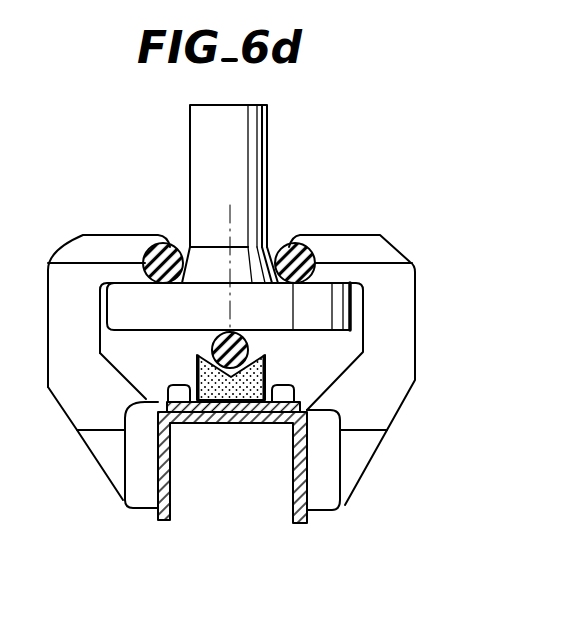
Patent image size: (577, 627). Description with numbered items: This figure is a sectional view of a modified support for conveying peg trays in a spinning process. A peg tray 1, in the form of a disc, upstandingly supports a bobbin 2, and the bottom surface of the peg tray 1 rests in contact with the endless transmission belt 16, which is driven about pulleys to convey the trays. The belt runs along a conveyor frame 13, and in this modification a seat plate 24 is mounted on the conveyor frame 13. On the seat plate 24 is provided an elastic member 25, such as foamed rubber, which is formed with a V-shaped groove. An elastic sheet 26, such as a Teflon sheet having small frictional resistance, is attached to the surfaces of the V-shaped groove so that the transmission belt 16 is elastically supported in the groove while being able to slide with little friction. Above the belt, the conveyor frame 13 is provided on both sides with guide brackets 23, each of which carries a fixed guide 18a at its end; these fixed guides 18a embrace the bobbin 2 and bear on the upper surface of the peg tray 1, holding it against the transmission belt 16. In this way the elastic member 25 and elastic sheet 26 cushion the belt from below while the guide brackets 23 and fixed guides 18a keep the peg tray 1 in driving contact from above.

The peg tray 1 is at (118, 312).
The bobbin 2 is at (268, 160).
The conveyor frame 13 is at (156, 498).
The endless transmission belt 16 is at (213, 343).
The fixed guides 18a is at (166, 245).
The guide brackets 23 is at (403, 283).
The seat plate 24 is at (108, 427).
The elastic member 25 is at (282, 406).
The elastic sheet 26 is at (258, 350).